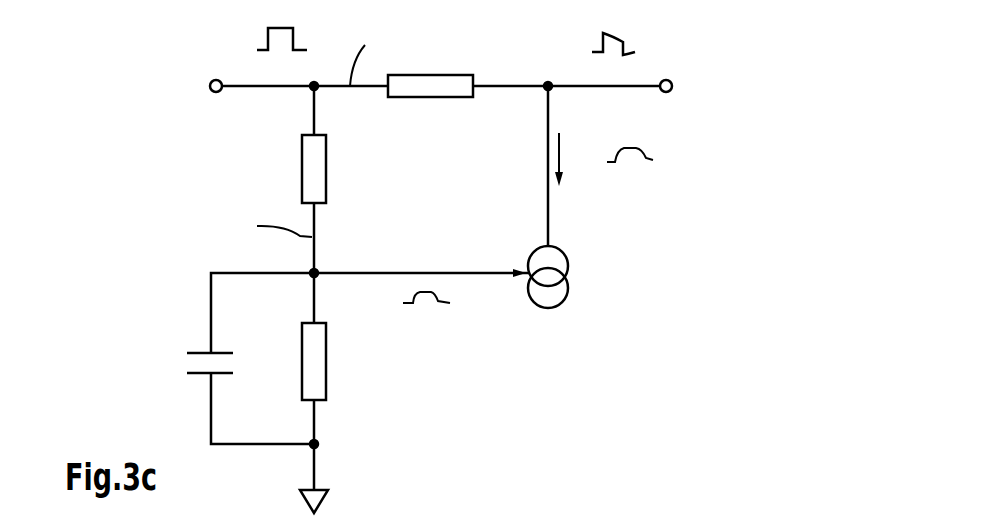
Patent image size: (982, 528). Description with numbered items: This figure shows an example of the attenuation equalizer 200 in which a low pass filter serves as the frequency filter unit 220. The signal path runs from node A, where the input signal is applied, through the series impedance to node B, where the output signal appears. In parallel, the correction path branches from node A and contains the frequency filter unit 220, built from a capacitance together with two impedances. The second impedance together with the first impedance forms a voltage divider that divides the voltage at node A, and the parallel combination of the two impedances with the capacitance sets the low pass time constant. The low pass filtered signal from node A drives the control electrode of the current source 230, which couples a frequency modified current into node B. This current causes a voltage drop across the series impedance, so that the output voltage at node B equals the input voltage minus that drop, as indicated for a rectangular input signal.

The attenuation equalizer 200 is at (738, 117).
The frequency filter unit 220 is at (390, 227).
The current source 230 is at (568, 268).